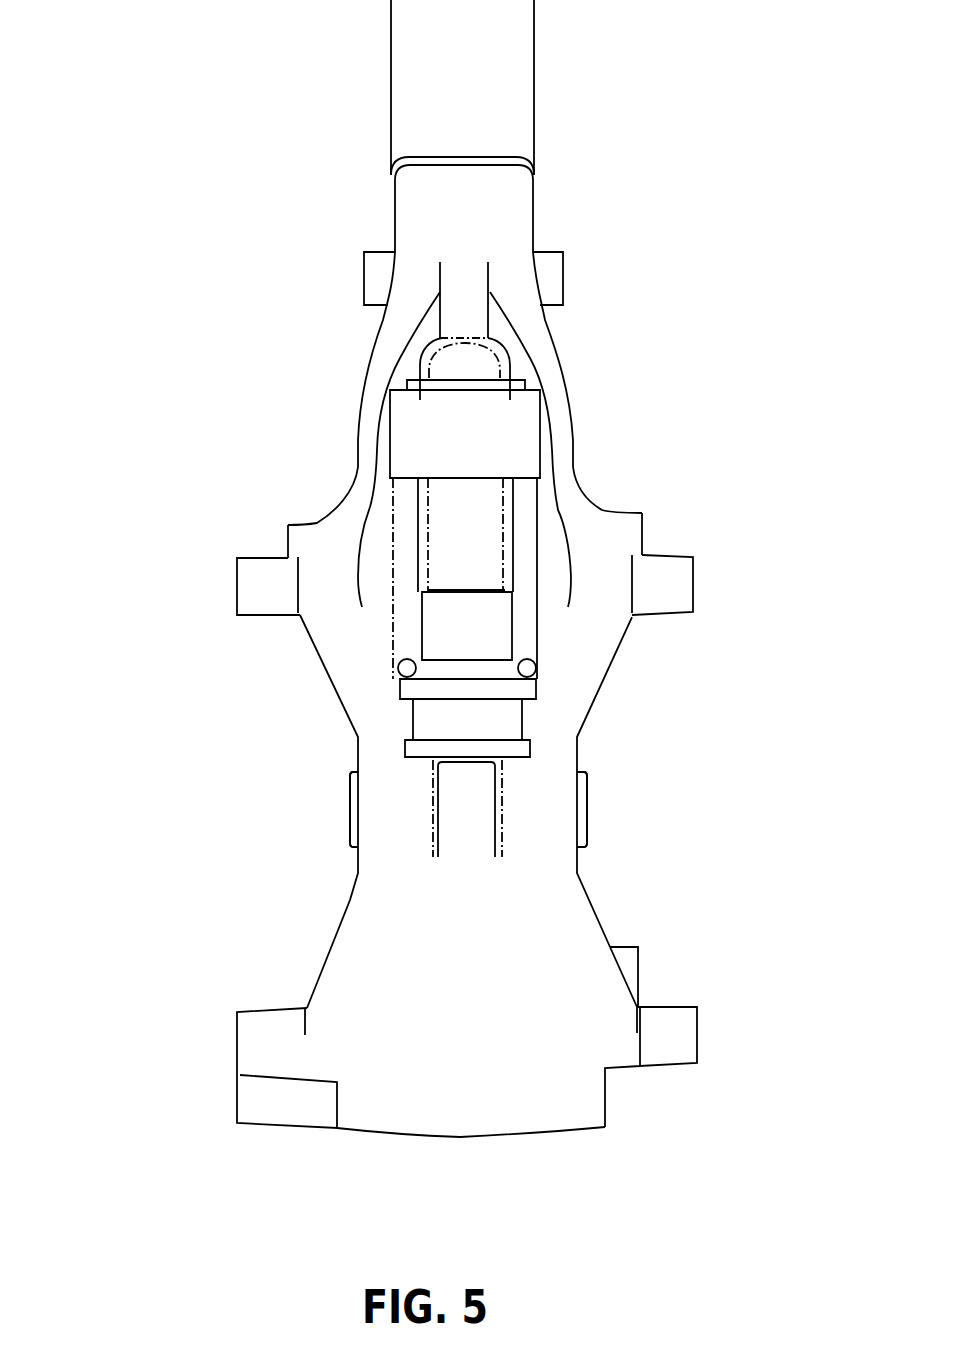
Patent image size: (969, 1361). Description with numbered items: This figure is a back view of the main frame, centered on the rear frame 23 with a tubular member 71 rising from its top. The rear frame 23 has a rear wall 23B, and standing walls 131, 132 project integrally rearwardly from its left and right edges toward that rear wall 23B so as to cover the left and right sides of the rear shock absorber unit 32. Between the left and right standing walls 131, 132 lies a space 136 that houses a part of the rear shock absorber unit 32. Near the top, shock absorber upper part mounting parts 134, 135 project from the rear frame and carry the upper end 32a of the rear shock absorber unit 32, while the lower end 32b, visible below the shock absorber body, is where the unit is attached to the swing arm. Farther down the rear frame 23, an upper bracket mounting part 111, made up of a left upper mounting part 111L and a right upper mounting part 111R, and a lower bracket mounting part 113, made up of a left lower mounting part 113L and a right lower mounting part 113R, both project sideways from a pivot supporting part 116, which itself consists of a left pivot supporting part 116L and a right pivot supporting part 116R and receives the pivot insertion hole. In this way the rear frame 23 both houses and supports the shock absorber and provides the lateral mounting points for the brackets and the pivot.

The steering shaft 71 is at (388, 63).
The rear wall 23B is at (484, 213).
The upper end 32a is at (463, 278).
The shock absorber upper part mounting part 134 is at (428, 328).
The shock absorber upper part mounting part 135 is at (497, 323).
The standing wall 131 is at (370, 398).
The standing wall 132 is at (558, 395).
The space 136 is at (370, 507).
The rear shock absorber unit 32 is at (540, 505).
The upper bracket mounting part 111 is at (242, 551).
The left upper mounting part 111L is at (252, 588).
The right upper mounting part 111R is at (673, 585).
The rear frame 23 is at (318, 668).
The pivot supporting part 116 is at (349, 780).
The left pivot supporting part 116L is at (350, 802).
The right pivot supporting part 116R is at (583, 805).
The lower end 32b is at (430, 845).
The lower bracket mounting part 113 is at (261, 1004).
The left lower mounting part 113L is at (253, 1048).
The right lower mounting part 113R is at (668, 1033).